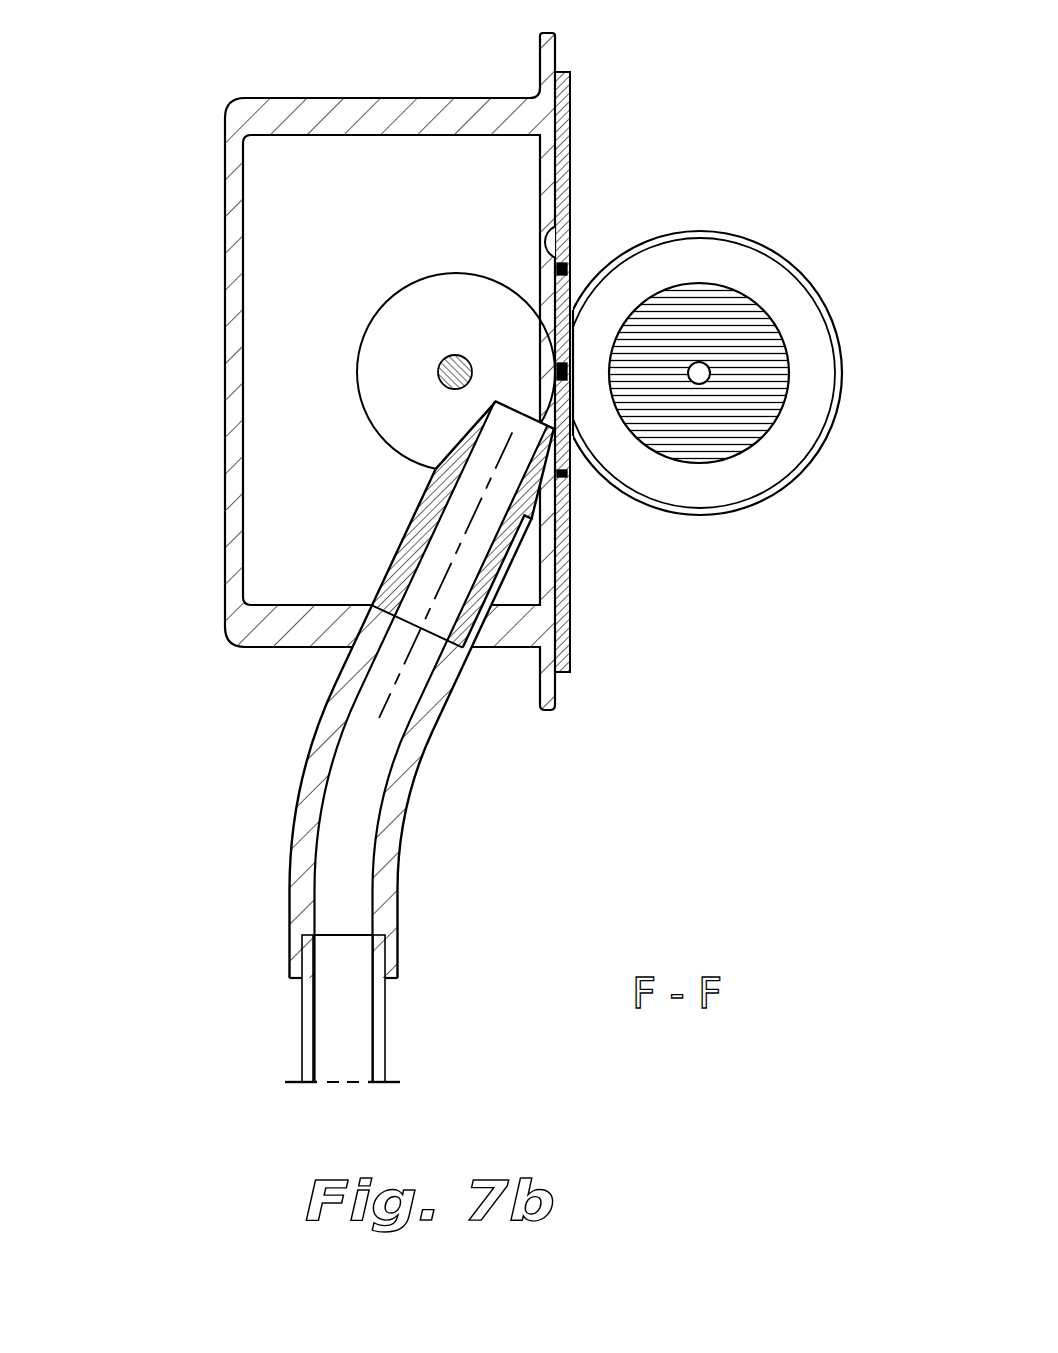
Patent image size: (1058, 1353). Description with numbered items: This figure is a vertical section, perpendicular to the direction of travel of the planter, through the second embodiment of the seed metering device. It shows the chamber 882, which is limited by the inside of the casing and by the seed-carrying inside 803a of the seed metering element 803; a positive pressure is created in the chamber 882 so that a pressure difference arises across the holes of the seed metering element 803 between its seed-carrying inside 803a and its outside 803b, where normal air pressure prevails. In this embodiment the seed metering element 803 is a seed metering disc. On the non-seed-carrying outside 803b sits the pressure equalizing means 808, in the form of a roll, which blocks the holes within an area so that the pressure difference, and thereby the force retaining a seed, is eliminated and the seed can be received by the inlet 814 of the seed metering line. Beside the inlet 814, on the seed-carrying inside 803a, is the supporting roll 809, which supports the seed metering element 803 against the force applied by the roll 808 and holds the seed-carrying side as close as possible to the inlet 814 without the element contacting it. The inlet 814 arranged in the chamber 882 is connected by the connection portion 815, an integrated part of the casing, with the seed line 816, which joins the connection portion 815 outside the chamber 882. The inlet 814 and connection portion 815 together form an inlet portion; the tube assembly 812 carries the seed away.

The seed metering element 803 is at (573, 102).
The seed-carrying inside 803a is at (573, 232).
The outside 803b is at (573, 168).
The pressure equalizing means 808 is at (700, 513).
The supporting roll 809 is at (363, 332).
The tube 812 is at (270, 818).
The inlet 814 is at (440, 473).
The connection portion 815 is at (317, 737).
The seed line 816 is at (298, 1045).
The chamber 882 is at (372, 252).